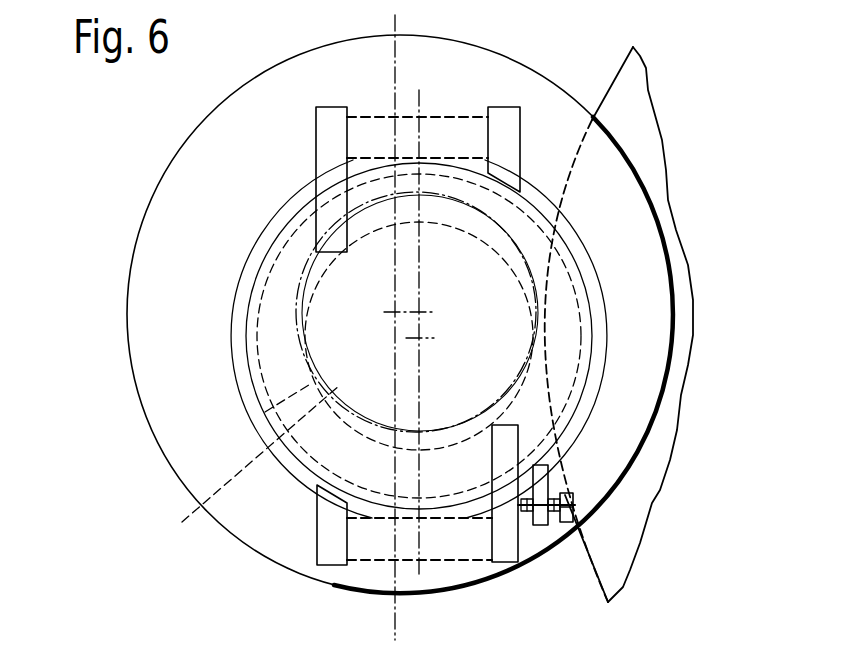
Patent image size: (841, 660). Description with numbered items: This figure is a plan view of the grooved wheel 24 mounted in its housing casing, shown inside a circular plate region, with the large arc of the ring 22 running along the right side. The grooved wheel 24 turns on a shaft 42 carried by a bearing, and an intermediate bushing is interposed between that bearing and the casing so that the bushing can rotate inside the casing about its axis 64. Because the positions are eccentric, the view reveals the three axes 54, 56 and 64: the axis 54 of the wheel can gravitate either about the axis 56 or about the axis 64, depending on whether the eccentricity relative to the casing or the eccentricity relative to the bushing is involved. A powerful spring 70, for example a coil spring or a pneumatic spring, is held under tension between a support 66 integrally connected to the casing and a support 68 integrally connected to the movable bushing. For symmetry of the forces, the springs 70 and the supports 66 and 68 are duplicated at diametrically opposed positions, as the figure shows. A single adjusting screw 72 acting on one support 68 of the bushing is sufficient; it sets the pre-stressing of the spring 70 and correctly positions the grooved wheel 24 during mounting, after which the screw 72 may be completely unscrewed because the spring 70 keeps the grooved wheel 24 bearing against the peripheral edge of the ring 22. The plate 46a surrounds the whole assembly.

The ring 22 is at (637, 88).
The grooved wheel 24 is at (182, 522).
The shaft 42 is at (268, 410).
The mounting plate 46a is at (182, 147).
The axis 54 is at (419, 338).
The axis 56 is at (395, 312).
The axis 64 is at (419, 312).
The support 66 is at (328, 117).
The support 68 is at (507, 113).
The spring 70 is at (370, 113).
The adjusting screw 72 is at (565, 528).